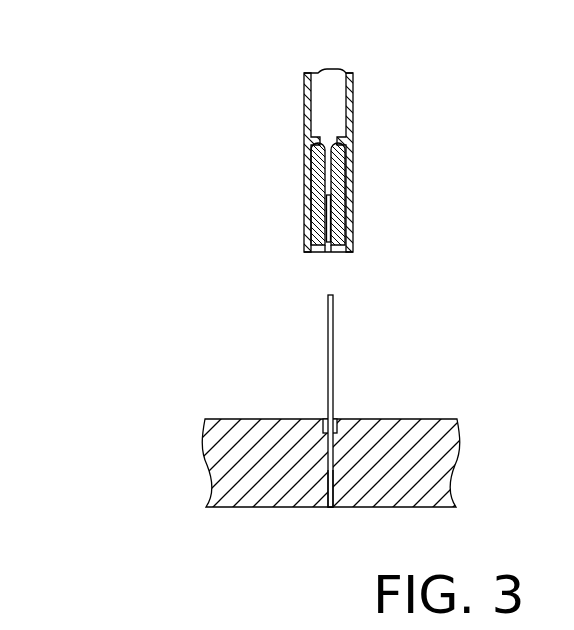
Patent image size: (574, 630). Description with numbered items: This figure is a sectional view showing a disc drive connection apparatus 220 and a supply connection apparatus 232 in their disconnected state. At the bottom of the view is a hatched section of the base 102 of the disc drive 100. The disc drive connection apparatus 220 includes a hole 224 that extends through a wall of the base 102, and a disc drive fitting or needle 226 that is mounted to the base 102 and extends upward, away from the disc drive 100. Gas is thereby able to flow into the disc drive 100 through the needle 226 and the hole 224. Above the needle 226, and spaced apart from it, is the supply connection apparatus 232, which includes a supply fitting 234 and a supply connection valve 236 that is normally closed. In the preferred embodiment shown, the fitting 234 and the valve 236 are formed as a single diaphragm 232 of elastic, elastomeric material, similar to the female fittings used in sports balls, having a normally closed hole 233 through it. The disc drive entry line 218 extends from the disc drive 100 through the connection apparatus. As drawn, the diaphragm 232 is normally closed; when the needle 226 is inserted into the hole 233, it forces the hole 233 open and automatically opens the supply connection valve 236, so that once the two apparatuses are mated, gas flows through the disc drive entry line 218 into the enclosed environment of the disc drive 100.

The disc drive 100 is at (243, 285).
The base 102 is at (410, 418).
The disc drive entry line 218 is at (332, 81).
The disc drive connection apparatus 220 is at (254, 421).
The hole 224 is at (340, 499).
The needle 226 is at (327, 362).
The supply connection apparatus 232 is at (282, 165).
The hole 233 is at (328, 248).
The supply fitting 234 is at (338, 203).
The supply connection valve 236 is at (338, 163).